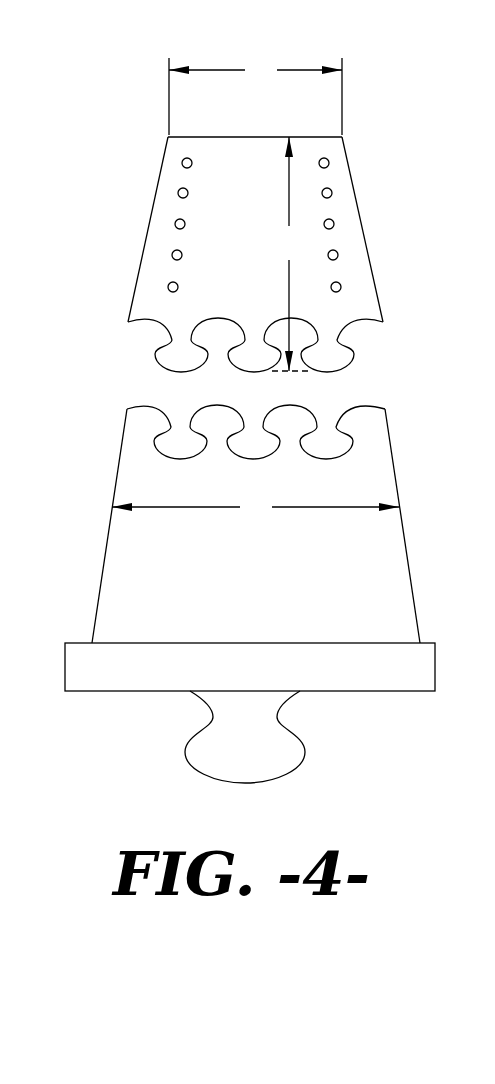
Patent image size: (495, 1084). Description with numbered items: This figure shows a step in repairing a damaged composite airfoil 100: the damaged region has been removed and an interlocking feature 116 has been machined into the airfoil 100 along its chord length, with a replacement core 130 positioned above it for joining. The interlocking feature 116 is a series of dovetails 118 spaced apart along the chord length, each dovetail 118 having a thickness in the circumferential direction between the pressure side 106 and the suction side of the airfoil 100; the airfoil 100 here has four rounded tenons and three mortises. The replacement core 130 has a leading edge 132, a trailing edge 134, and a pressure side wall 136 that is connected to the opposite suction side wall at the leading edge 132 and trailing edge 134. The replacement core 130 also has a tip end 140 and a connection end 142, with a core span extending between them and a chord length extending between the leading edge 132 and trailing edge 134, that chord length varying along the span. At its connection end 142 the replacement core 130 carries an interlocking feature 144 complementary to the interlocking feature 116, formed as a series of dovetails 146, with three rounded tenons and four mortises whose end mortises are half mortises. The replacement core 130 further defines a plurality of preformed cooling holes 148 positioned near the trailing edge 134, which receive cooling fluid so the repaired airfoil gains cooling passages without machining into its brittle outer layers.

The airfoil 100 is at (275, 591).
The pressure side 106 is at (385, 583).
The interlocking feature 116 is at (243, 439).
The dovetail 118 is at (293, 423).
The replacement core 130 is at (260, 292).
The leading edge 132 is at (148, 218).
The trailing edge 134 is at (362, 222).
The pressure side wall 136 is at (353, 268).
The tip end 140 is at (160, 138).
The connection end 142 is at (240, 314).
The interlocking feature 144 is at (148, 337).
The dovetail 146 is at (338, 356).
The cooling hole 148 is at (333, 165).